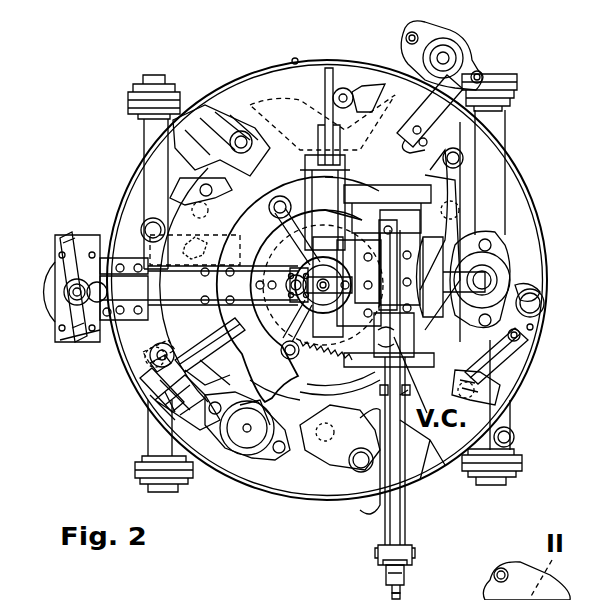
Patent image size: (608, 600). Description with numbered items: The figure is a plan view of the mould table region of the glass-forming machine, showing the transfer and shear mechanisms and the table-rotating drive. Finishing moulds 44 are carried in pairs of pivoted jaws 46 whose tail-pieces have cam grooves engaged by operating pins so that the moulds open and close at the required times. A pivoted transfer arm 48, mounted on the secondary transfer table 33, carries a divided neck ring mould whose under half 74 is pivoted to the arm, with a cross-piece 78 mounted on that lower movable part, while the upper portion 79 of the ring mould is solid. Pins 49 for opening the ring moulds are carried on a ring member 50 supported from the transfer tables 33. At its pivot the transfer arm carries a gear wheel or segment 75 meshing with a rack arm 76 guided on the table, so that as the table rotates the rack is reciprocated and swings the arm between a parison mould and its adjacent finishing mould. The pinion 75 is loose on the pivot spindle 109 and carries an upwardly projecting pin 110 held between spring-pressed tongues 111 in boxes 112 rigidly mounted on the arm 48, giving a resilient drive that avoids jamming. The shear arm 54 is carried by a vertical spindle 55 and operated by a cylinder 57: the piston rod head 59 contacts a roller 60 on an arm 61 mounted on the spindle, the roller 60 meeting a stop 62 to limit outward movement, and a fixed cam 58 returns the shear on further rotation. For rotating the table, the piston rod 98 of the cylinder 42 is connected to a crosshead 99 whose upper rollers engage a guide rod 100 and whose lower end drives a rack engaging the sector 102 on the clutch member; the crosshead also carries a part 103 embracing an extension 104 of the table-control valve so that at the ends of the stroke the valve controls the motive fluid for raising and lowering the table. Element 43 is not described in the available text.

The transfer table 33 is at (220, 161).
The cylinder 42 is at (397, 207).
The lever bracket 43 is at (62, 296).
The finishing mould 44 is at (253, 447).
The pair of jaws 46 is at (275, 412).
The transfer arm 48 is at (133, 344).
The pins for opening the ring moulds 49 is at (296, 58).
The ring member 50 is at (210, 95).
The shear arm 54 is at (143, 355).
The vertical spindle 55 is at (154, 218).
The cylinder 57 is at (193, 342).
The fixed cam 58 is at (298, 100).
The piston rod head 59 is at (167, 267).
The roller 60 is at (147, 243).
The arm 61 is at (150, 232).
The stop 62 is at (140, 256).
The under half of ring mould 74 is at (518, 285).
The gear wheel or segment 75 is at (350, 88).
The rack arm 76 is at (340, 74).
The cross-piece 78 is at (524, 368).
The upper portion of ring mould 79 is at (545, 325).
The piston rod 98 is at (405, 585).
The crosshead 99 is at (406, 558).
The guide rod 100 is at (404, 498).
The sector 102 is at (327, 343).
The part embracing valve extension 103 is at (389, 582).
The extension of the valve V.C. 104 is at (394, 513).
The pivot spindle 109 is at (167, 366).
The upwardly projecting pin 110 is at (160, 413).
The spring-pressed tongues 111 is at (173, 358).
The boxes 112 is at (147, 362).